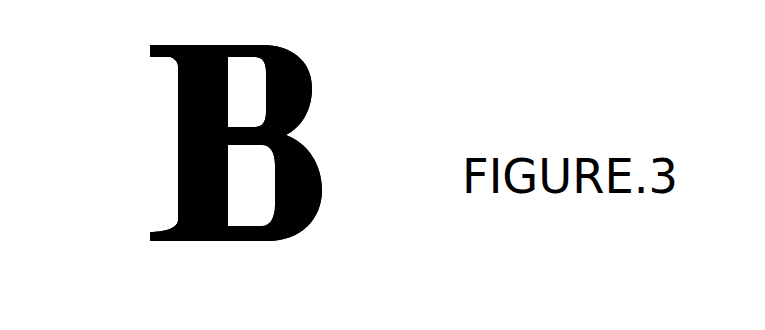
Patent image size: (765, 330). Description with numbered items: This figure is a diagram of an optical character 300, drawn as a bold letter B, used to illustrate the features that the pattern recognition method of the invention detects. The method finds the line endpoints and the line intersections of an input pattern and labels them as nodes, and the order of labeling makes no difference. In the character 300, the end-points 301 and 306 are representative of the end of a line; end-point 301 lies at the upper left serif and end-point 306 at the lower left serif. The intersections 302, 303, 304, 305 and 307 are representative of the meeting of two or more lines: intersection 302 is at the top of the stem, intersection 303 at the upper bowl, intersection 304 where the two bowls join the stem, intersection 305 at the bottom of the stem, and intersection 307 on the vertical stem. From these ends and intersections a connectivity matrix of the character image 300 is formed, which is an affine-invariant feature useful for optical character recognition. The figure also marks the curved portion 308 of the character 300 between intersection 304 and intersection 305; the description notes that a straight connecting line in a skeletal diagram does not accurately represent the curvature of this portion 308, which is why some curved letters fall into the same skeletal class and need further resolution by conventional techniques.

The character 300 is at (308, 249).
The end-point 301 is at (154, 47).
The intersection 302 is at (198, 45).
The intersection 303 is at (313, 80).
The intersection 304 is at (288, 135).
The intersection 305 is at (182, 241).
The end-point 306 is at (155, 235).
The intersection 307 is at (178, 130).
The portion 308 is at (327, 153).